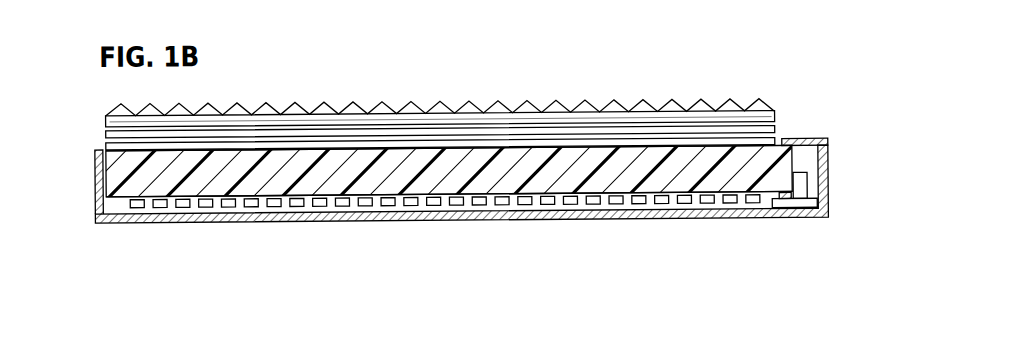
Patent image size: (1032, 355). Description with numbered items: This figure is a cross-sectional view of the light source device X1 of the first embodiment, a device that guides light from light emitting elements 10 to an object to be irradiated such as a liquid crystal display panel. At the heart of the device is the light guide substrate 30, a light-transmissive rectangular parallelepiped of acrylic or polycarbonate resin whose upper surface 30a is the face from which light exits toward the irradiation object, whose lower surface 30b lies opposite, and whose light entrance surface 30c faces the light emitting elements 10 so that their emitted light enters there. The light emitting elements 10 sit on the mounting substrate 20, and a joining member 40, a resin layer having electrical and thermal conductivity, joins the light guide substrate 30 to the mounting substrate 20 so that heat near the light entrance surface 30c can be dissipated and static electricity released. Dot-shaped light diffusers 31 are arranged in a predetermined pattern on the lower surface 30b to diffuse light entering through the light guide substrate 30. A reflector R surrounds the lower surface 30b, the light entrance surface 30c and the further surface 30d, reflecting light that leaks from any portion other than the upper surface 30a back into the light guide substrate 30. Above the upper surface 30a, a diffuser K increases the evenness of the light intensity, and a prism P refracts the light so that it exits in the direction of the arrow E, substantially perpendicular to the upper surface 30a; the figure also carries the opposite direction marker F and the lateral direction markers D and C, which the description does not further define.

The light emitting elements 10 is at (800, 190).
The mounting substrate 20 is at (828, 222).
The light guide substrate 30 is at (250, 182).
The upper surface 30a is at (124, 151).
The lower surface 30b is at (119, 208).
The light entrance surface 30c is at (801, 156).
The surface portion of light guide substrate 30d is at (96, 165).
The light diffusers 31 is at (510, 206).
The joining member 40 is at (784, 213).
The reflector R is at (822, 144).
The diffuser K is at (517, 140).
The prism P is at (625, 117).
The light source device X1 is at (713, 88).
The arrow E is at (895, 112).
The direction F is at (895, 225).
The direction D is at (374, 305).
The direction C is at (571, 305).